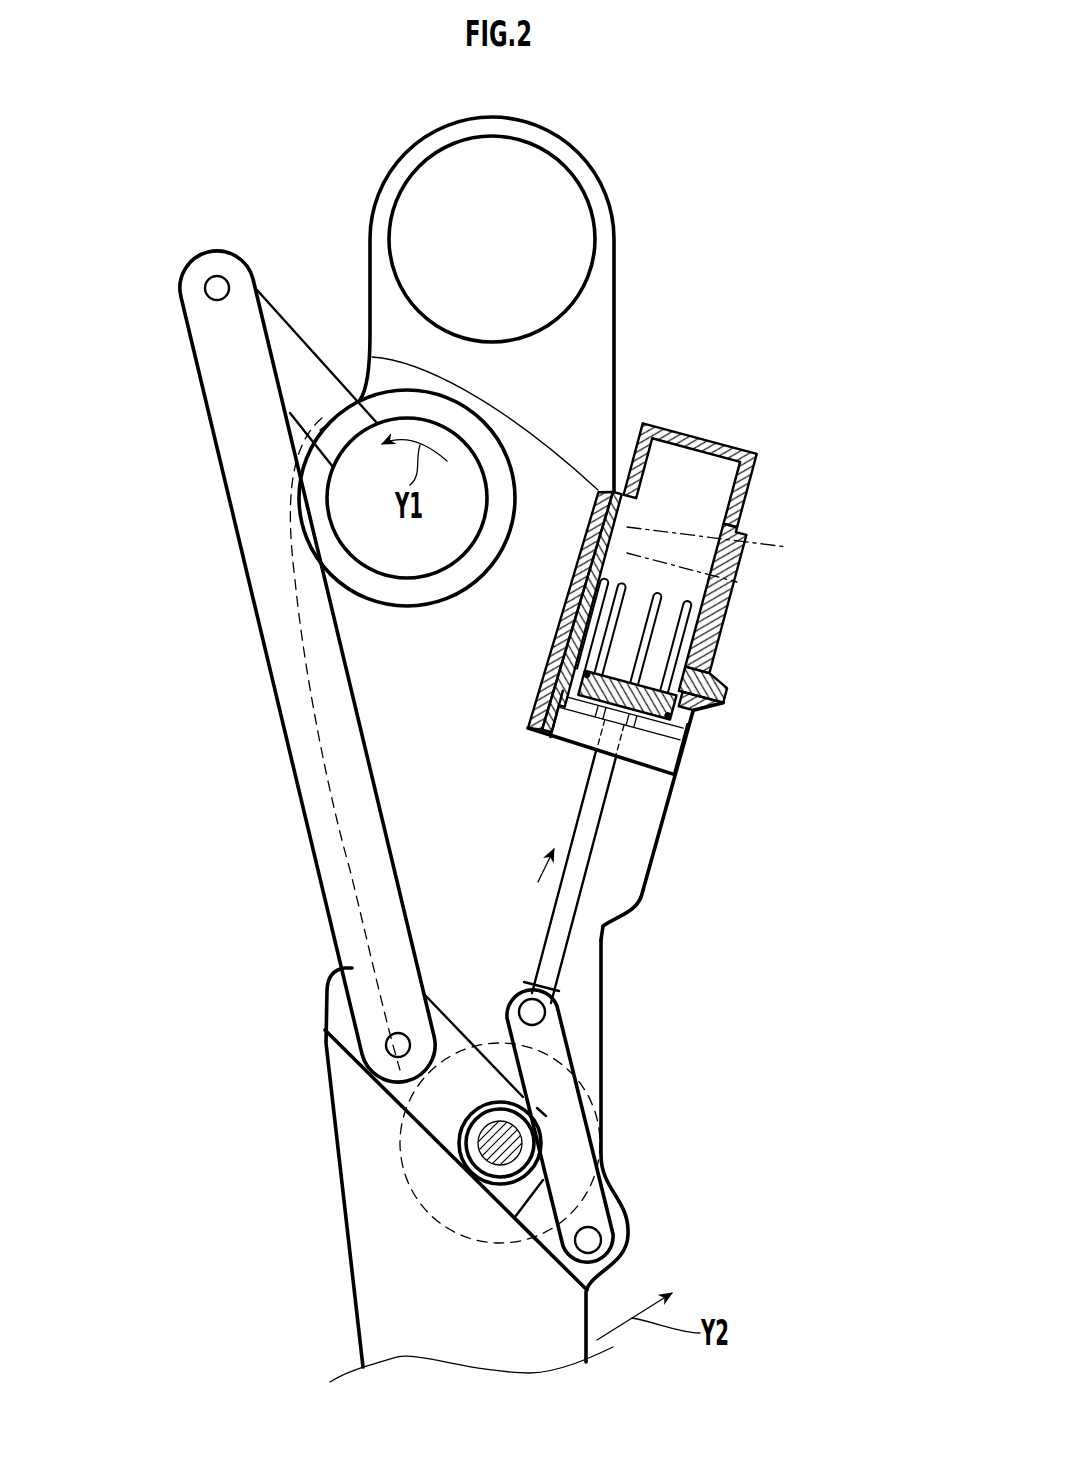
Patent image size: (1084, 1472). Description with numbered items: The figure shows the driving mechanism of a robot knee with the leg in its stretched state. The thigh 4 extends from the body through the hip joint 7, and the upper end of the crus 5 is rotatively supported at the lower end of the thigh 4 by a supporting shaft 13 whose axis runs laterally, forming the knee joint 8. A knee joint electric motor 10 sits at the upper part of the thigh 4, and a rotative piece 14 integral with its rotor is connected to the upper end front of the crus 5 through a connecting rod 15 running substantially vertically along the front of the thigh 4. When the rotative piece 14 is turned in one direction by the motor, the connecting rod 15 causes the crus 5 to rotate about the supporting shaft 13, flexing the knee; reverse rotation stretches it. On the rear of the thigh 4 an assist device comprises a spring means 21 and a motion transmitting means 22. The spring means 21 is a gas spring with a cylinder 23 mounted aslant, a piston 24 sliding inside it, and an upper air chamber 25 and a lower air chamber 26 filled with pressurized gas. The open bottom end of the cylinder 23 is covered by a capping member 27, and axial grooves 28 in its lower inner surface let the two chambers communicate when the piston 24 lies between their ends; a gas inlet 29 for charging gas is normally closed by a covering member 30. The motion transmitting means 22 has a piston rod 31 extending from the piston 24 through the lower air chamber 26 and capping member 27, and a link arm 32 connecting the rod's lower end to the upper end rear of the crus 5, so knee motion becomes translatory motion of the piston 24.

The thigh 4 is at (615, 333).
The crus 5 is at (595, 1345).
The hip joint 7 is at (583, 229).
The knee joint 8 is at (612, 1138).
The knee joint electric motor 10 is at (400, 578).
The supporting shaft 13 is at (543, 1140).
The rotative piece 14 is at (314, 385).
The connecting rod 15 is at (262, 658).
The spring means 21 is at (742, 695).
The motion transmitting means 22 is at (602, 958).
The cylinder 23 is at (752, 497).
The piston 24 is at (697, 645).
The upper air chamber 25 is at (697, 460).
The lower air chamber 26 is at (647, 713).
The capping member 27 is at (628, 757).
The grooves 28 is at (605, 593).
The gas inlet 29 is at (735, 684).
The covering member 30 is at (700, 705).
The piston rod 31 is at (593, 860).
The link arm 32 is at (582, 1045).